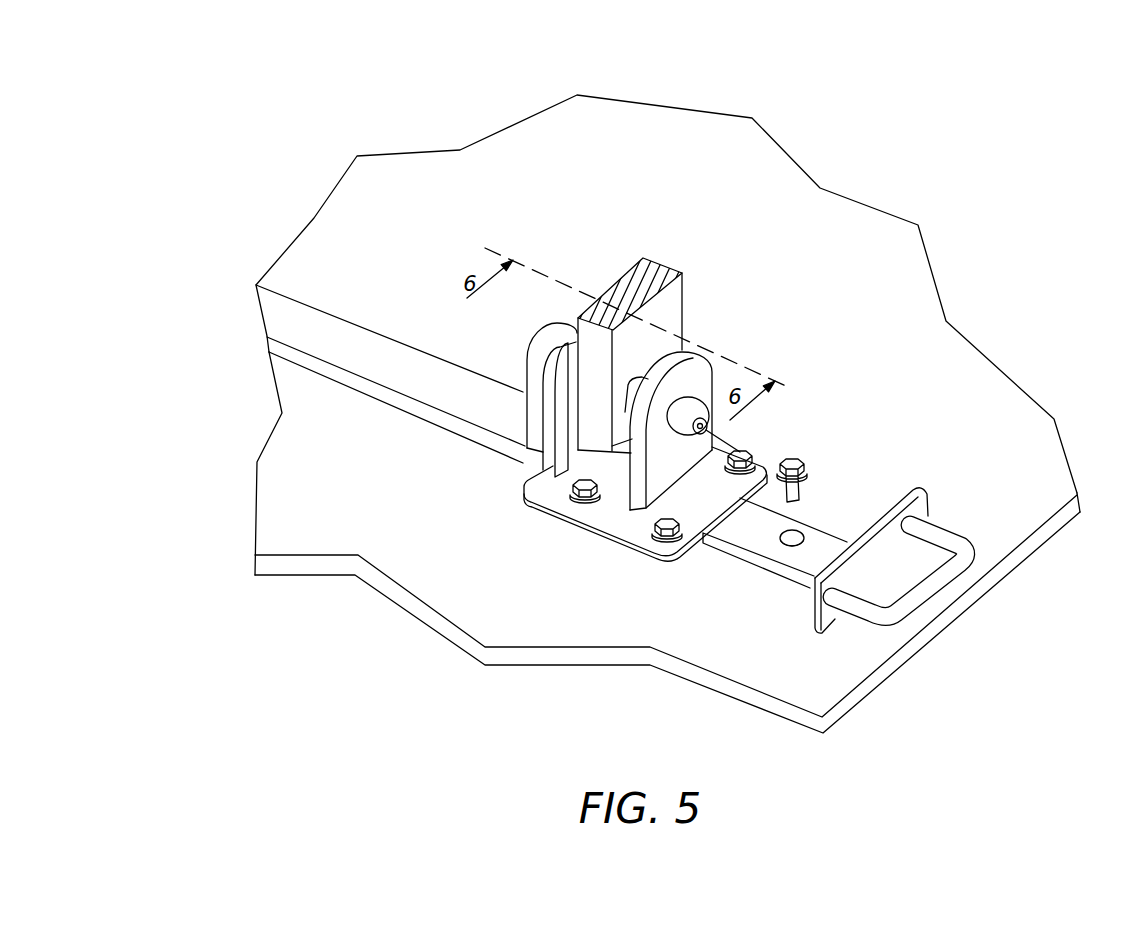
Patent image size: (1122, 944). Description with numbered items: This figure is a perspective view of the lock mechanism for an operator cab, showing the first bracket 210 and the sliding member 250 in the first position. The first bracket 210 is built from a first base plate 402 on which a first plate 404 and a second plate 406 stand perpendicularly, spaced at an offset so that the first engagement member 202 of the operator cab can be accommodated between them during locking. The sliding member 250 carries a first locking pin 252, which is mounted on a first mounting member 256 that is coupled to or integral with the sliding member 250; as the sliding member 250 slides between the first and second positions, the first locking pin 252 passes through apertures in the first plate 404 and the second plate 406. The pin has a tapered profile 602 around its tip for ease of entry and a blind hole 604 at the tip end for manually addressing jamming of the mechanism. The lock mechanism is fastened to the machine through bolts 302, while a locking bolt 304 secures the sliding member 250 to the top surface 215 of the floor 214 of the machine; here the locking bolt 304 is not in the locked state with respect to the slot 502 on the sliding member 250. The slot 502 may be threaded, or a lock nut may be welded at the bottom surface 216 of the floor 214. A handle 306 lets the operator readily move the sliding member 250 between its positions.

The first engagement member 202 is at (660, 262).
The first bracket 210 is at (578, 541).
The floor 214 is at (436, 623).
The top surface 215 is at (285, 500).
The bottom surface 216 is at (461, 656).
The sliding member 250 is at (345, 404).
The first locking pin 252 is at (640, 360).
The first mounting member 256 is at (533, 392).
The bolts 302 is at (688, 498).
The locking bolt 304 is at (794, 453).
The handle 306 is at (947, 585).
The first base plate 402 is at (550, 498).
The first plate 404 is at (687, 355).
The second plate 406 is at (560, 412).
The slot 502 is at (801, 532).
The tapered profile 602 is at (668, 426).
The blind hole 604 is at (740, 470).